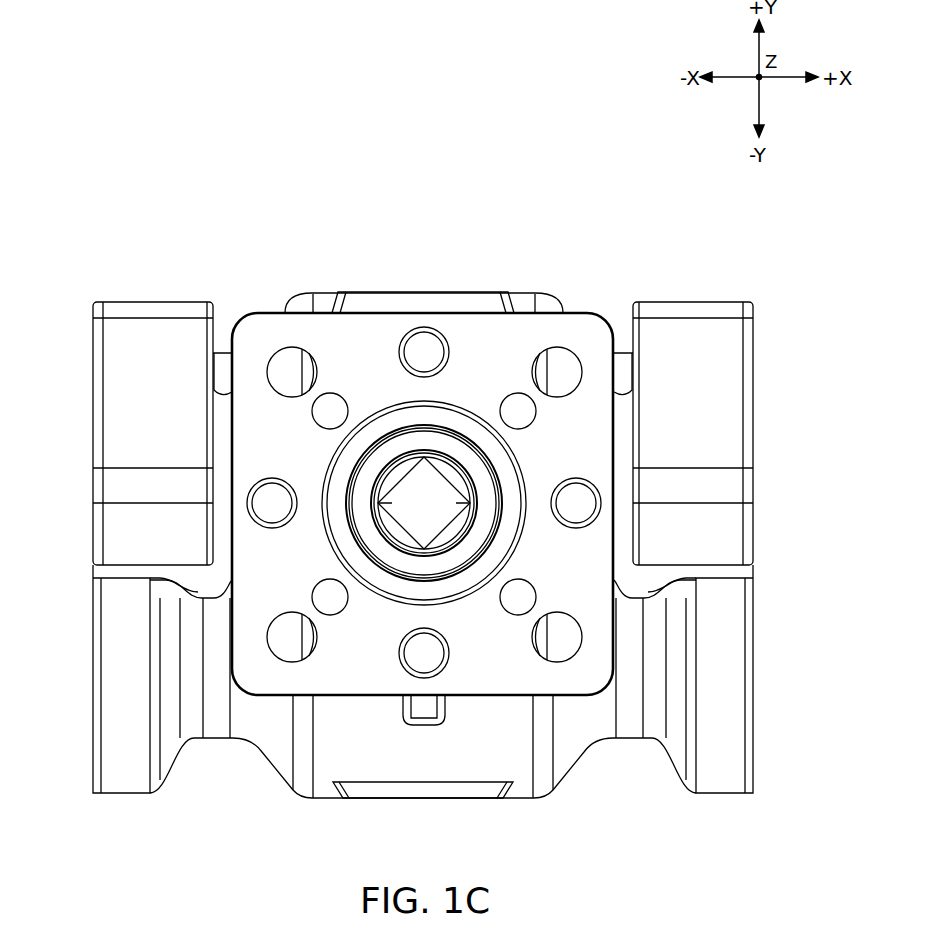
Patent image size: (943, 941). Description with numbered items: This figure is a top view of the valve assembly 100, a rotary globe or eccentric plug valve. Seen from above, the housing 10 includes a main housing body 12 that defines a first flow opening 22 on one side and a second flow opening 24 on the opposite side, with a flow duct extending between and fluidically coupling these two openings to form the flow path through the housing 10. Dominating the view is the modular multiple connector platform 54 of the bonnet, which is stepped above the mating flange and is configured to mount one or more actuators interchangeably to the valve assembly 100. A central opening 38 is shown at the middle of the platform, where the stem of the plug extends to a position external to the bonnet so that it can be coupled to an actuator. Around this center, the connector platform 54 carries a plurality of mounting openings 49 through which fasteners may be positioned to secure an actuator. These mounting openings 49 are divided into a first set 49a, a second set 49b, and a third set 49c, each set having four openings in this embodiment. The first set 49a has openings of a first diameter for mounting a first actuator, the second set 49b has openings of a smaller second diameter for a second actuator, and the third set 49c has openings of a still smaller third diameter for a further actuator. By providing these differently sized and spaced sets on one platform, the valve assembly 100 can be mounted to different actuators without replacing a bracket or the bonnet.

The valve assembly 100 is at (86, 172).
The housing 10 is at (226, 758).
The main housing body 12 is at (545, 799).
The first flow opening 22 is at (93, 650).
The second flow opening 24 is at (753, 676).
The modular multiple connector platform 54 is at (594, 310).
The central bore 38 is at (402, 470).
The mounting openings 49 is at (274, 352).
The first set of mounting openings 49a is at (316, 355).
The second set of mounting openings 49b is at (450, 352).
The third set of mounting openings 49c is at (320, 430).